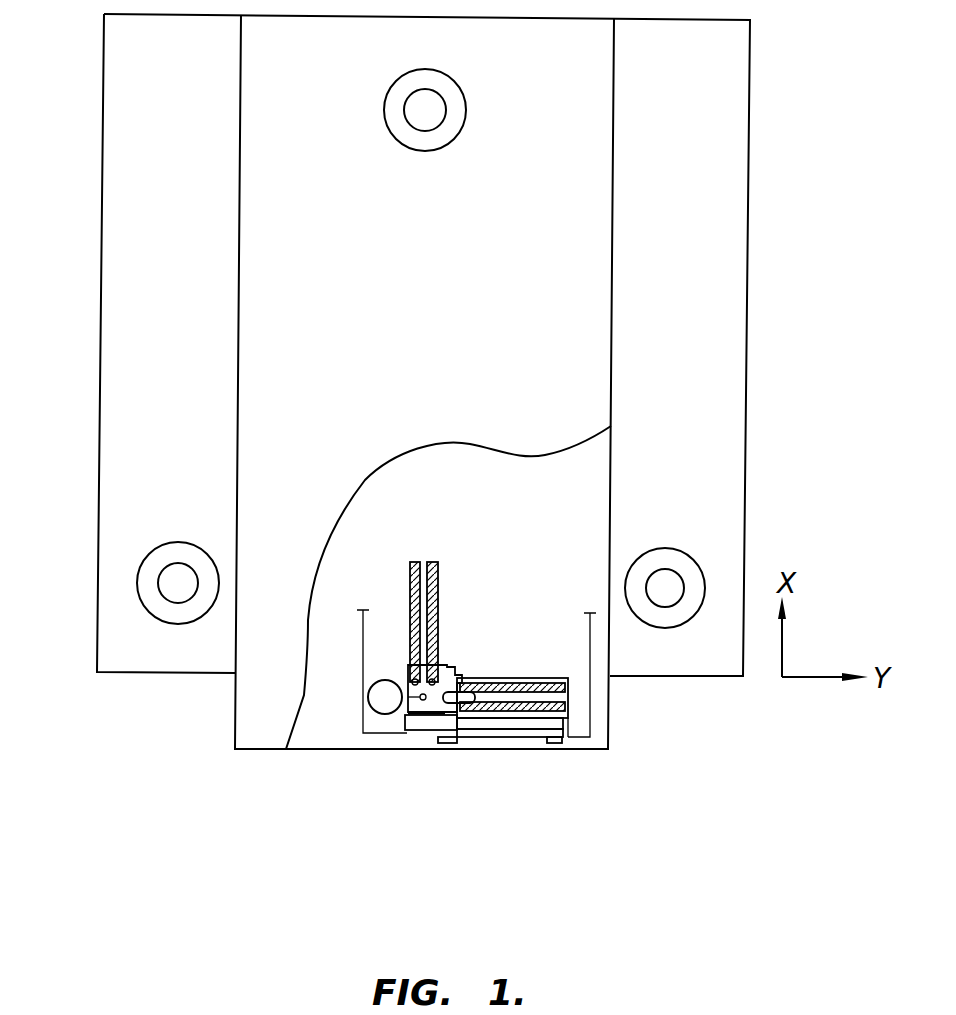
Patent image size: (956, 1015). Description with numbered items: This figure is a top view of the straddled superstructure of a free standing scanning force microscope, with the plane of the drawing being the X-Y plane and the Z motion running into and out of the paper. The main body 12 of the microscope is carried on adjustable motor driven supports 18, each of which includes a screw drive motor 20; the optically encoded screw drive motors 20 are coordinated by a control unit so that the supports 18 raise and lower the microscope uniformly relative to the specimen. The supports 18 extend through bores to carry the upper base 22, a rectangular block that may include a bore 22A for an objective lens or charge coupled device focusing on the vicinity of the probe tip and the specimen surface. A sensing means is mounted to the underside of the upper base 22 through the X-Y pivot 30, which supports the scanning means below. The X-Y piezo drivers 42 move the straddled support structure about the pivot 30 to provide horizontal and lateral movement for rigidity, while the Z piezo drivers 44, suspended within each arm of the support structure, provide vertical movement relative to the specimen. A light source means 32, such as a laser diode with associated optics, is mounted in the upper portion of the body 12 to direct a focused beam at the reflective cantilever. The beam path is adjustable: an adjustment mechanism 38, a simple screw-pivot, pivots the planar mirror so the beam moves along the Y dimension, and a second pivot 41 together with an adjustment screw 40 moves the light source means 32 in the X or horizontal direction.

The main body 12 is at (153, 179).
The motor driven supports 18 is at (432, 122).
The screw drive motor 20 is at (466, 111).
The upper base 22 is at (305, 390).
The bore 22A is at (368, 681).
The X-Y pivot 30 is at (408, 716).
The light source means 32 is at (565, 680).
The adjustment mechanism 38 is at (442, 745).
The adjustment screw 40 is at (552, 745).
The second pivot 41 is at (475, 700).
The X-Y piezo drivers 42 is at (427, 540).
The Z piezo drivers 44 is at (405, 672).